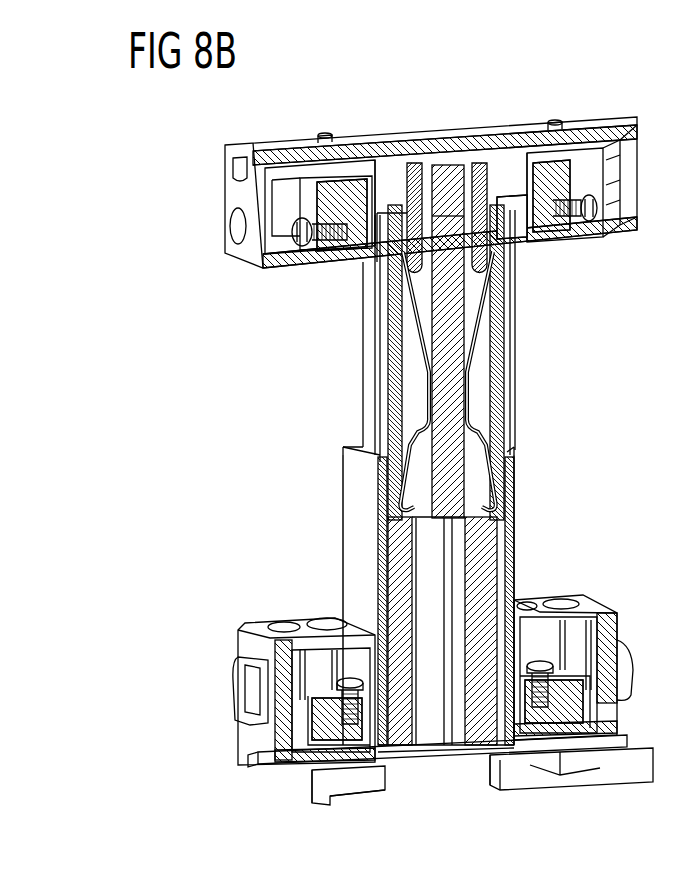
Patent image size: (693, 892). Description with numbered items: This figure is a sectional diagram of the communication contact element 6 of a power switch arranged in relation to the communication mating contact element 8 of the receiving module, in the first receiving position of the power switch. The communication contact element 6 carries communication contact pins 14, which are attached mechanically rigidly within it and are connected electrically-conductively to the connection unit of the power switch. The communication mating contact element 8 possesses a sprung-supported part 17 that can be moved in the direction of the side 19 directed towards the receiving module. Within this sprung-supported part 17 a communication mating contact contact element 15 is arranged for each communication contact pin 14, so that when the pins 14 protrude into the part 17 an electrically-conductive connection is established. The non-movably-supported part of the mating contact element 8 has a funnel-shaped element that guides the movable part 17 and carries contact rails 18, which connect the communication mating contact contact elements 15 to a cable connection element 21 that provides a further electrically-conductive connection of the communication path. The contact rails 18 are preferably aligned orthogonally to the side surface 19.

The communication contact element 6 is at (198, 205).
The communication mating contact element 8 is at (258, 525).
The communication contact pin 14 is at (405, 264).
The communication mating contact contact element 15 is at (413, 312).
The sprung-supported part 17 is at (497, 355).
The contact rail 18 is at (384, 540).
The side directed towards the receiving module 19 is at (455, 776).
The cable connection element 21 is at (308, 740).